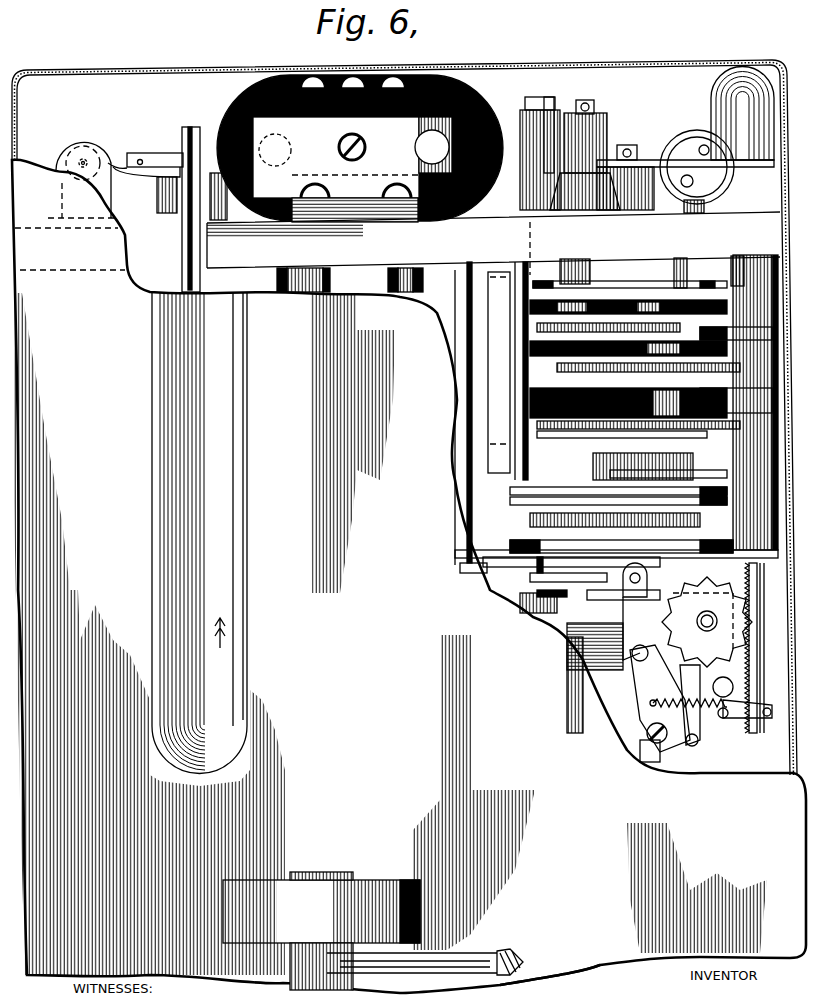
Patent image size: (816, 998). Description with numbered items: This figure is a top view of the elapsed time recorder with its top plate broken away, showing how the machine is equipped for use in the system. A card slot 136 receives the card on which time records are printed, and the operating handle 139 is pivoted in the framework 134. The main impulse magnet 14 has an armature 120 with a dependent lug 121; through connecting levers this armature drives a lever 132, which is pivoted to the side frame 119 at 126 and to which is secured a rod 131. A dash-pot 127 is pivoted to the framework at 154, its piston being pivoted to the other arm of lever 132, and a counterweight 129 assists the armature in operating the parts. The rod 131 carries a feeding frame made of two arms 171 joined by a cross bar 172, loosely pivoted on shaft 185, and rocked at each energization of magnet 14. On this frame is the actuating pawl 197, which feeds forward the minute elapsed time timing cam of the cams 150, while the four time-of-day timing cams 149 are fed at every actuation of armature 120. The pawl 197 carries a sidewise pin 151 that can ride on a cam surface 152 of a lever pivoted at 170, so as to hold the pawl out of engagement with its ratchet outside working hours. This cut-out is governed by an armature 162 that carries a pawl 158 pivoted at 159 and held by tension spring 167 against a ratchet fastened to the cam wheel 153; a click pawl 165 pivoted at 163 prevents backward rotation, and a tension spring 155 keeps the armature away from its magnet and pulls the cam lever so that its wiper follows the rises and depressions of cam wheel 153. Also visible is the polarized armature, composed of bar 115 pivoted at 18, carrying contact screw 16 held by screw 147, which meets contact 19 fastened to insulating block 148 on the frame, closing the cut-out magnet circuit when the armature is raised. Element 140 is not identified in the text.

The magnet 14 is at (365, 129).
The contact screw 16 is at (90, 145).
The contact 19 is at (97, 160).
The screw 147 is at (150, 158).
The bar 115 is at (607, 128).
The insulating block 148 is at (118, 222).
The plate 140 is at (352, 169).
The side frame 119 is at (493, 240).
The armature 120 is at (505, 127).
The dependent lug 121 is at (554, 100).
The pivot 18 is at (594, 107).
The pivot 126 is at (634, 150).
The dash-pot 127 is at (687, 140).
The counterweight 129 is at (737, 80).
The lever 132 is at (571, 210).
The arms of feeding frame 171 is at (430, 600).
The rod 131 is at (529, 238).
The armature 162 is at (732, 328).
The click pawl 165 is at (733, 405).
The timing cams 149 is at (613, 377).
The timing cams 150 is at (627, 482).
The card slot 136 is at (205, 585).
The shaft 185 is at (650, 765).
The pivot 154 is at (747, 545).
The cross bar 172 is at (513, 513).
The actuating pawl 197 is at (510, 553).
The pin 151 is at (523, 563).
The cam surface 152 is at (580, 573).
The pivot 170 is at (607, 607).
The cam wheel 153 is at (673, 623).
The pawl 158 is at (650, 683).
The pivot 159 is at (647, 763).
The tension spring 167 is at (700, 717).
The pivot 163 is at (733, 727).
The tension spring 155 is at (760, 683).
The operating handle 139 is at (470, 955).
The framework 134 is at (577, 950).